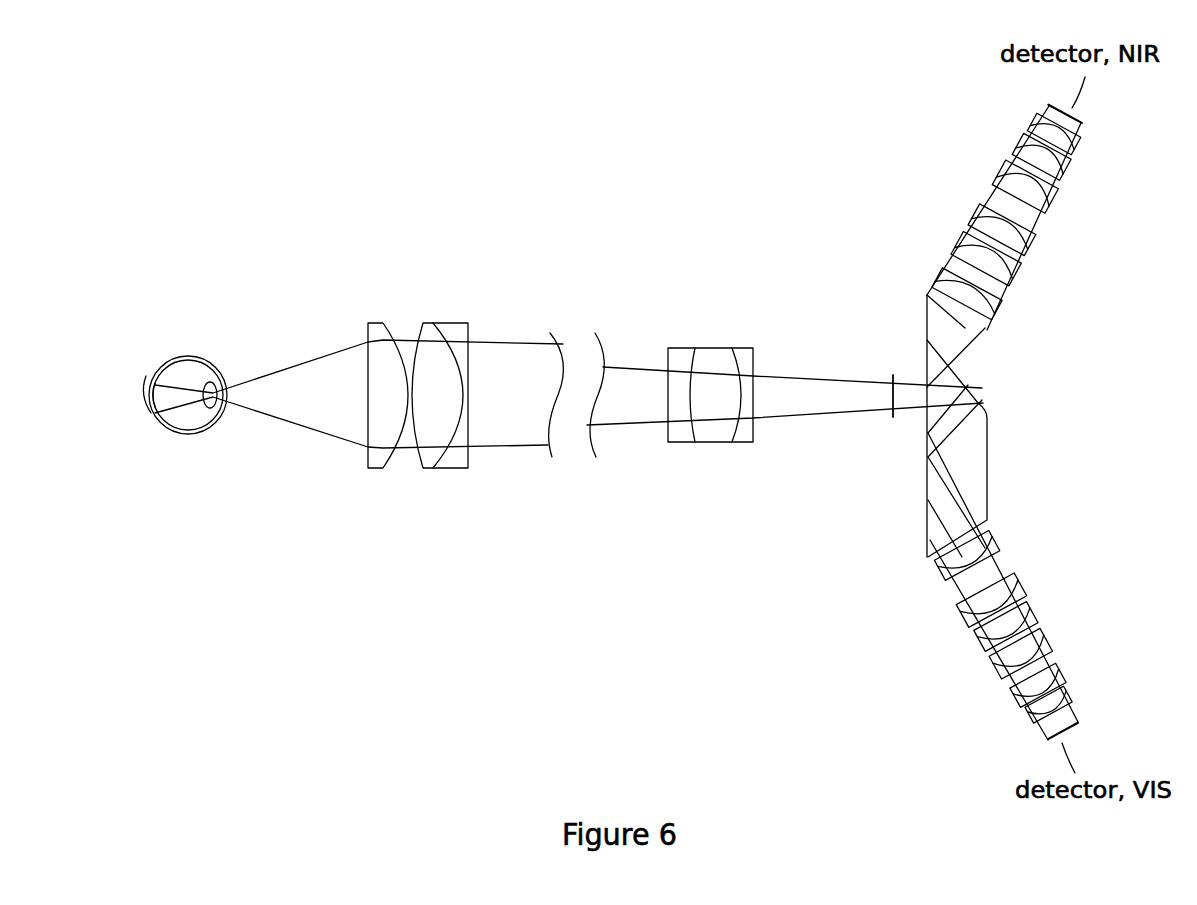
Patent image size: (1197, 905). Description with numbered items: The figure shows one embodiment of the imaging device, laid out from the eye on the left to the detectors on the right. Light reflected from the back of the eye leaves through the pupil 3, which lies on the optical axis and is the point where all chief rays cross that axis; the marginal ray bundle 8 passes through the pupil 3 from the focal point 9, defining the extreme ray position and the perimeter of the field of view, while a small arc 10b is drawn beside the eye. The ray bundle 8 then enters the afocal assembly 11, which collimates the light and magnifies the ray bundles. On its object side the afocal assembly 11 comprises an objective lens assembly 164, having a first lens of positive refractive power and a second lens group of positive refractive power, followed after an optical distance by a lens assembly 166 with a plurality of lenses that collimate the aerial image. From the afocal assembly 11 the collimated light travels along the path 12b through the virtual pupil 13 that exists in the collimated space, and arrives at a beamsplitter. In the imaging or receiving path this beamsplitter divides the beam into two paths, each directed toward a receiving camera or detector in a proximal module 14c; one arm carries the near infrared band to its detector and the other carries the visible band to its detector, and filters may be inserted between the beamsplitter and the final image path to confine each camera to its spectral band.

The pupil 3 is at (218, 372).
The focal point 9 is at (157, 410).
The fixation target / cornea reference 10b is at (138, 390).
The marginal ray bundle 8 is at (271, 372).
The afocal assembly 11 is at (747, 292).
The objective lens assembly 164 is at (472, 478).
The lens assembly 166 is at (747, 452).
The path 12b is at (817, 373).
The virtual pupil 13 is at (893, 362).
The proximal module 14c is at (1010, 327).